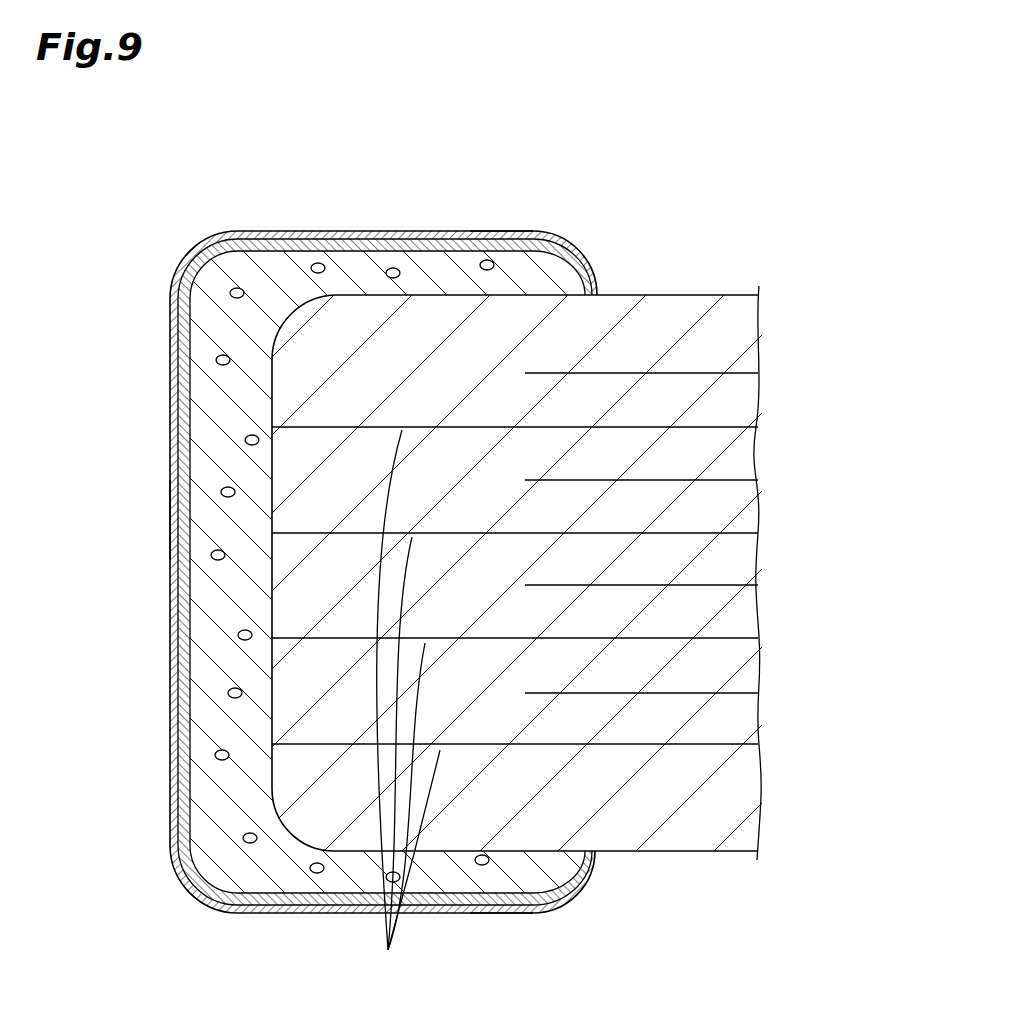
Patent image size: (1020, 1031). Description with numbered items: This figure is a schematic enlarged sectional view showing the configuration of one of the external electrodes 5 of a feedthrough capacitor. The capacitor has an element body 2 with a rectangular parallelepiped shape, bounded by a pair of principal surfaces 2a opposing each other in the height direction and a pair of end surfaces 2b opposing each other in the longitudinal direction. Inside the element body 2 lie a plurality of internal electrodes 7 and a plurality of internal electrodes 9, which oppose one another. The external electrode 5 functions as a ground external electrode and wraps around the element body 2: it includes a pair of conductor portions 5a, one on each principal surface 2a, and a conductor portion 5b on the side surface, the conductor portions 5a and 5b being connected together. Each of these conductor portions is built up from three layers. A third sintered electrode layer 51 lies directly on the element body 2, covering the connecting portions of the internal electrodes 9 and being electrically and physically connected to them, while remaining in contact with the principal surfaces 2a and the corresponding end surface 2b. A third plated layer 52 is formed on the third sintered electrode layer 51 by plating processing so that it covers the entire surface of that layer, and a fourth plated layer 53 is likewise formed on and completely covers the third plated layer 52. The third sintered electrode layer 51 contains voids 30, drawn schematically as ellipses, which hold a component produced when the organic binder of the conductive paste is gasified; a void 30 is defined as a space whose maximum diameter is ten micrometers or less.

The element body 2 is at (510, 561).
The principal surface 2a is at (658, 295).
The end surface 2b is at (270, 603).
The external electrode 5 is at (510, 569).
The conductor portion 5a is at (500, 231).
The conductor portion 5b is at (170, 521).
The third sintered electrode layer 51 is at (426, 262).
The third plated layer 52 is at (350, 246).
The fourth plated layer 53 is at (270, 233).
The void 30 is at (237, 288).
The internal electrode 7 is at (677, 373).
The internal electrode 9 is at (408, 708).